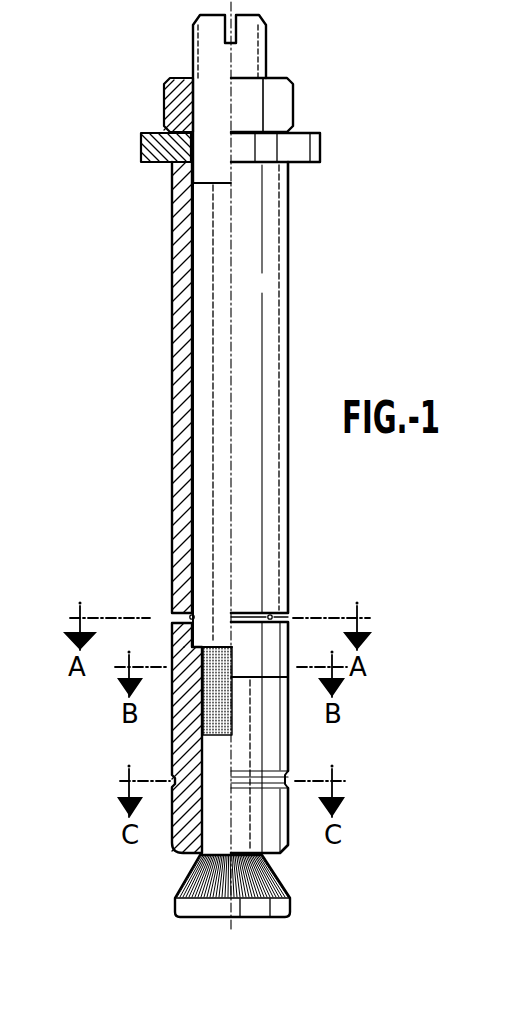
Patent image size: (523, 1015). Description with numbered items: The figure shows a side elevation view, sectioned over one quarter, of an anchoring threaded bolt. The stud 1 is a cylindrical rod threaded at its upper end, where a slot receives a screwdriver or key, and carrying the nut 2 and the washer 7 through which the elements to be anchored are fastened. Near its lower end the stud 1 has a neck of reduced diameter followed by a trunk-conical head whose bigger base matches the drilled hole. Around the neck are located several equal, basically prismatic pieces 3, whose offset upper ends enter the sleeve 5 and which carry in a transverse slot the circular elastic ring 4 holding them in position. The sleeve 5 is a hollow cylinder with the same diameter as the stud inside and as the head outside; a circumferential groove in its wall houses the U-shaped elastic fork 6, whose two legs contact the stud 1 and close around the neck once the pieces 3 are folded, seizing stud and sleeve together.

The stud 1 is at (245, 62).
The nut 2 is at (282, 112).
The pieces 3 is at (250, 758).
The circular elastic ring 4 is at (290, 778).
The sleeve 5 is at (263, 442).
The elastic fork 6 is at (172, 618).
The washer 7 is at (320, 163).